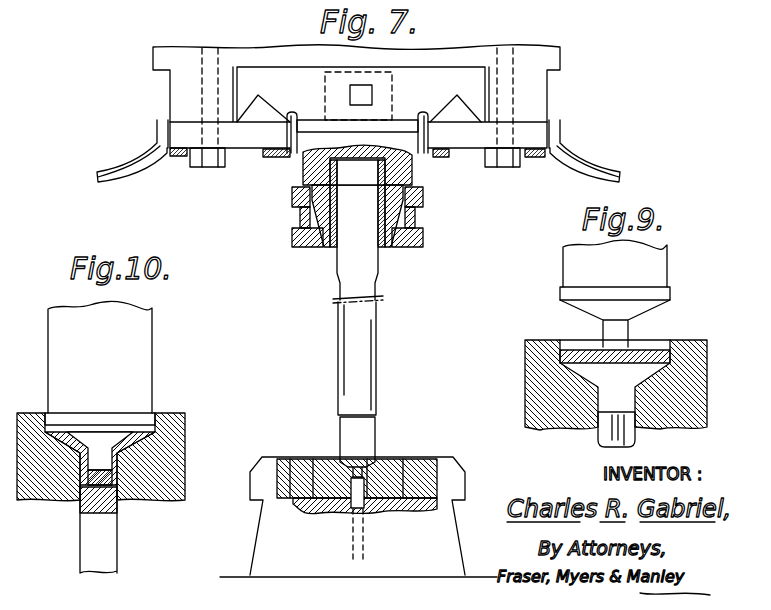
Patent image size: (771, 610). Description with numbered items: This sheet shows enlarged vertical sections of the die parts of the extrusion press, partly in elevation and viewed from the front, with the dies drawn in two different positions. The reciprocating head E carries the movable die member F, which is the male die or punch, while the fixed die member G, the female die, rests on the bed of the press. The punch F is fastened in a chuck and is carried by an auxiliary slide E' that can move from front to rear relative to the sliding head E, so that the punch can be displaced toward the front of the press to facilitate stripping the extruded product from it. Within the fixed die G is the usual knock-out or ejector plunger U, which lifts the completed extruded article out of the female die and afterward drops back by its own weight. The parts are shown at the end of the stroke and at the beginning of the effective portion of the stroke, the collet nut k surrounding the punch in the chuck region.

In FIG. 7, the reciprocating head E is at (358, 113).
In FIG. 7, the auxiliary slide E' is at (372, 96).
In FIG. 7, the collet nut k is at (423, 212).
In FIG. 7, the movable die member F is at (365, 310).
In FIG. 10, the movable die member F is at (100, 432).
In FIG. 9, the movable die member F is at (617, 337).
In FIG. 7, the fixed die member G is at (452, 482).
In FIG. 10, the fixed die member G is at (101, 457).
In FIG. 9, the fixed die member G is at (697, 398).
In FIG. 7, the knock-out or ejector plunger U is at (352, 505).
In FIG. 10, the knock-out or ejector plunger U is at (117, 488).
In FIG. 9, the knock-out or ejector plunger U is at (617, 427).